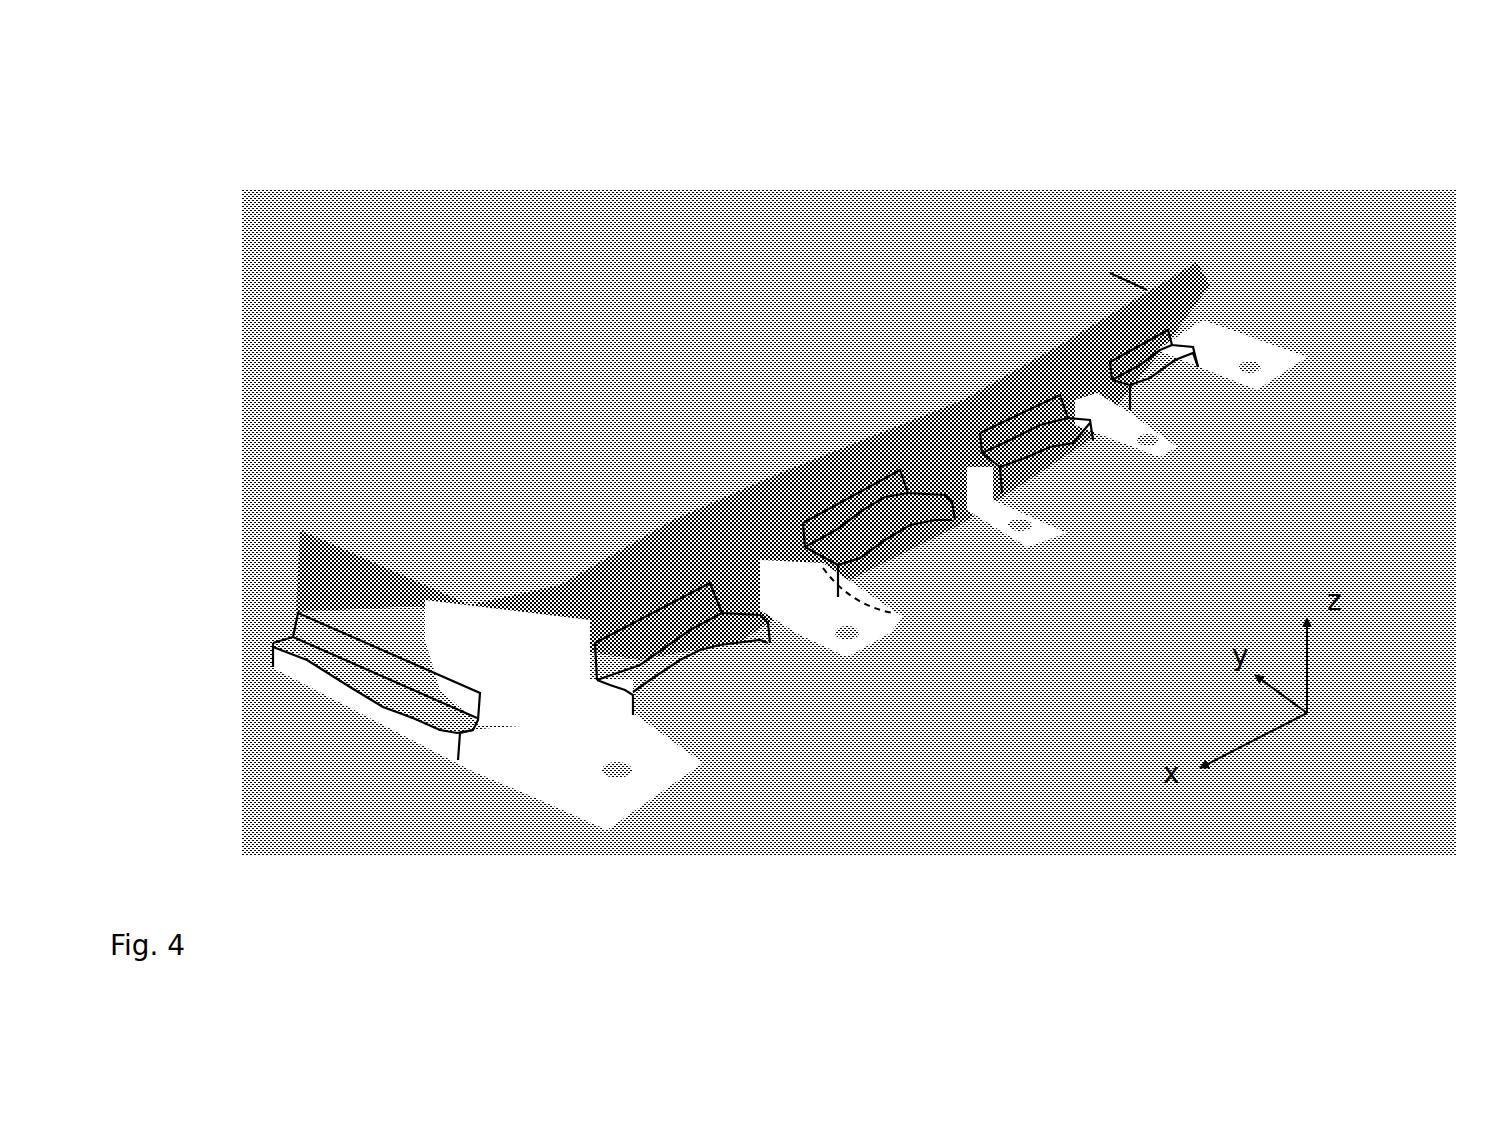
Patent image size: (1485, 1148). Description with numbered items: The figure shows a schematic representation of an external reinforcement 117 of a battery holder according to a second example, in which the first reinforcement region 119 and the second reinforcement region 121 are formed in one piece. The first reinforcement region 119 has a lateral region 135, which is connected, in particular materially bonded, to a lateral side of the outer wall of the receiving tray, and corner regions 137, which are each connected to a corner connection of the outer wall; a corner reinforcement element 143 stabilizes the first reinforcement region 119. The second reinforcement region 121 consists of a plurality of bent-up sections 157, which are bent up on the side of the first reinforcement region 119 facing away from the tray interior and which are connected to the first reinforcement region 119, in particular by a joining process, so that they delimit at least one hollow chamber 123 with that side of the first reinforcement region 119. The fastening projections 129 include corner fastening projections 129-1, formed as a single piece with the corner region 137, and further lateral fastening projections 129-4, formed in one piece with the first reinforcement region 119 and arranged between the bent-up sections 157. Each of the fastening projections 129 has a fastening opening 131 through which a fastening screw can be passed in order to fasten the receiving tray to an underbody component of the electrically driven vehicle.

The external reinforcement 117 is at (277, 140).
The first reinforcement region 119 is at (793, 394).
The corner region 137 is at (1200, 253).
The lateral region 135 is at (847, 440).
The corner reinforcement element 143 is at (567, 633).
The second reinforcement region 121 is at (735, 545).
The bent-up sections 157 is at (887, 543).
The hollow chamber 123 is at (883, 597).
The fastening opening 131 is at (857, 640).
The fastening projections 129 is at (790, 596).
The corner fastening projections 129-1 is at (673, 770).
The further lateral fastening projections 129-4 is at (847, 653).